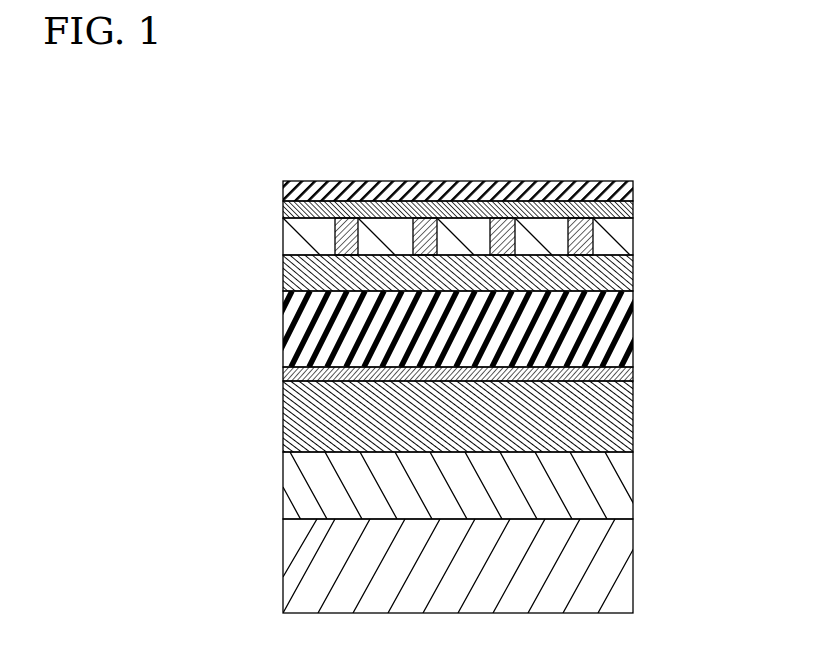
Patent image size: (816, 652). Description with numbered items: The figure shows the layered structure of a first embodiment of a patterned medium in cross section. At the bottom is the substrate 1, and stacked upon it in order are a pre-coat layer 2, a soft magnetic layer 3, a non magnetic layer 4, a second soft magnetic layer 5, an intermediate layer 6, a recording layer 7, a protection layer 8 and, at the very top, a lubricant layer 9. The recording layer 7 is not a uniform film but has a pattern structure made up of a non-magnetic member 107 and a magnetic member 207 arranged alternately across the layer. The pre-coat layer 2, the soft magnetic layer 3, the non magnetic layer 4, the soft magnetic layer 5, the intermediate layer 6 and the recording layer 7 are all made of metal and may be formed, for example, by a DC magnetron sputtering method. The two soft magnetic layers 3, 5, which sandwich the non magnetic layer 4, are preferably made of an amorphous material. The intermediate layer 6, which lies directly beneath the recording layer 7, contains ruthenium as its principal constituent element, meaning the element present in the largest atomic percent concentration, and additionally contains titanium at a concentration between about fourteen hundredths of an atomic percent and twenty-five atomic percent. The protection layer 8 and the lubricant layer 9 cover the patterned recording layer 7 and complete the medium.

The substrate 1 is at (634, 565).
The pre-coat layer 2 is at (634, 488).
The soft magnetic layer 3 is at (634, 425).
The non magnetic layer 4 is at (634, 370).
The soft magnetic layer 5 is at (634, 327).
The intermediate layer 6 is at (634, 272).
The recording layer 7 is at (505, 180).
The protection layer 8 is at (634, 203).
The lubricant layer 9 is at (603, 181).
The non-magnetic member 107 is at (338, 218).
The magnetic member 207 is at (404, 222).